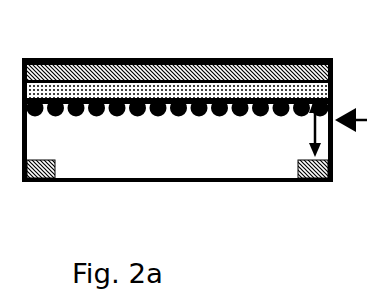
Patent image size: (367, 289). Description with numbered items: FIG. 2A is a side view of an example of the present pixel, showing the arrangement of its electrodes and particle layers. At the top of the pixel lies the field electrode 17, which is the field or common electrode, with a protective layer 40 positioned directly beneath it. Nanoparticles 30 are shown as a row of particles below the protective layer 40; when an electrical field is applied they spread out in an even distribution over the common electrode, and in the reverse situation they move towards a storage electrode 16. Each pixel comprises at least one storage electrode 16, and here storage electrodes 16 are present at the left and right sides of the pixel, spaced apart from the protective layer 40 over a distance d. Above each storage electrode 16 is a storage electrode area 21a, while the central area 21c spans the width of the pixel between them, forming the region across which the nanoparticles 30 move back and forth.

The storage electrode 16 is at (35, 192).
The field electrode 17 is at (148, 78).
The storage electrode area 21a is at (40, 50).
The central area 21c is at (52, 135).
The nanoparticle 30 is at (251, 130).
The protective layer 40 is at (91, 98).